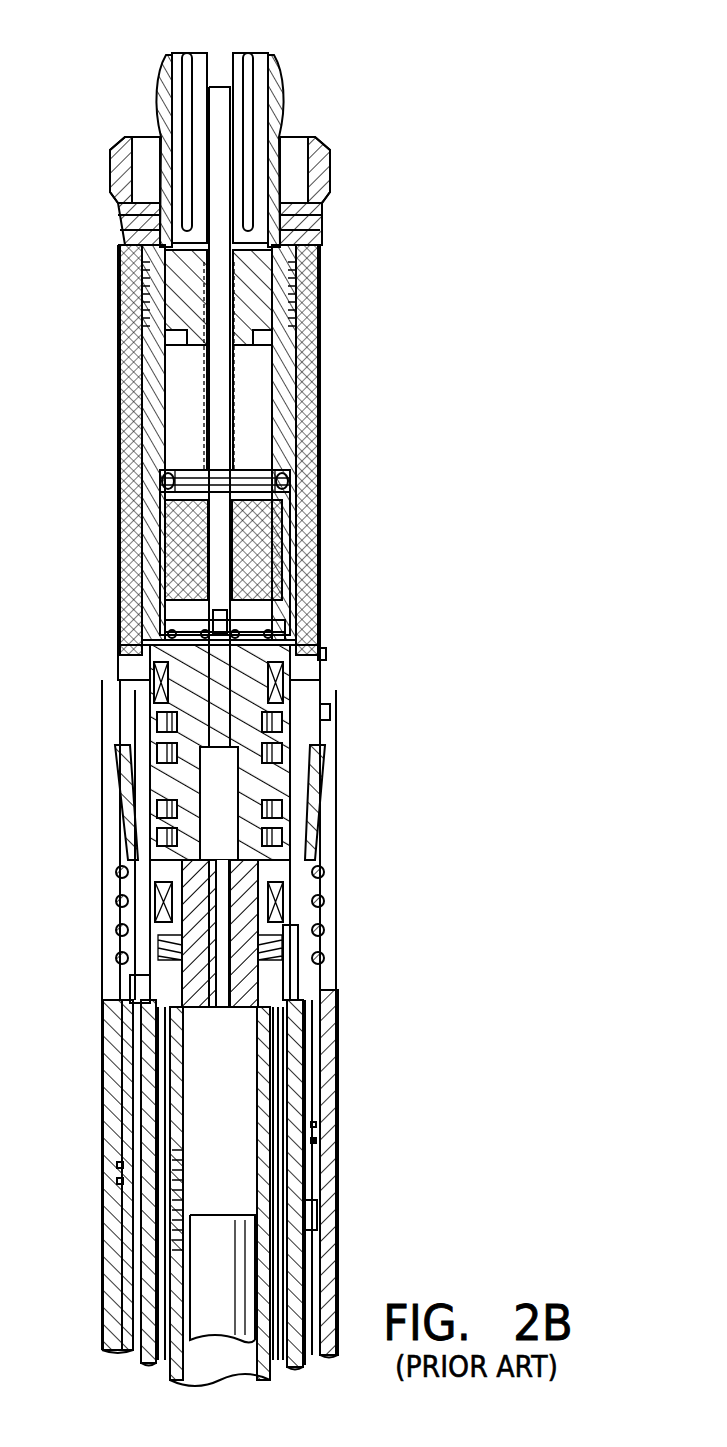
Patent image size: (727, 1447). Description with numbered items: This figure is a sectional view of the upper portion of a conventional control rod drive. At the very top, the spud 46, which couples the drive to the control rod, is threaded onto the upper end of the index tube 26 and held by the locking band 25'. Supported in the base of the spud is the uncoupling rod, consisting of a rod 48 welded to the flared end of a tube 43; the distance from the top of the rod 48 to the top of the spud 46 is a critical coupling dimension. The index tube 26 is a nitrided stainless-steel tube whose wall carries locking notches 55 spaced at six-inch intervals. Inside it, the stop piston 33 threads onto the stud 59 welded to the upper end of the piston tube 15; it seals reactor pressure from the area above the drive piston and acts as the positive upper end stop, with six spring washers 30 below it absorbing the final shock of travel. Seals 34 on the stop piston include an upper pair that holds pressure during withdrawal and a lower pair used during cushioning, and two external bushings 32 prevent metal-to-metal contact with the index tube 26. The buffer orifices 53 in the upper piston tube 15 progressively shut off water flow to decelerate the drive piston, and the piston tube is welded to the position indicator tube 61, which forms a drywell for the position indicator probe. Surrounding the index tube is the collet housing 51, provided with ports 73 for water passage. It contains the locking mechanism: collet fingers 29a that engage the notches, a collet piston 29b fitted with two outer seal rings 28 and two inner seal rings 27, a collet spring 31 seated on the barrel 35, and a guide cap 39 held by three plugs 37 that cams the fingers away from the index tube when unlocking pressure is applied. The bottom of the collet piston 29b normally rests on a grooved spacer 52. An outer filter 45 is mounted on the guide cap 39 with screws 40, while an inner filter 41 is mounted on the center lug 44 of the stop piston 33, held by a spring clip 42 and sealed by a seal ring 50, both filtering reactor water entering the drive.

The piston tube 15 is at (180, 1102).
The locking band 25' is at (254, 443).
The index tube 26 is at (290, 936).
The inner piston seal rings 27 is at (125, 1180).
The outer piston seal rings 28 is at (316, 1140).
The collet fingers 29a is at (132, 803).
The collet piston 29b is at (330, 1070).
The spring washers 30 is at (140, 985).
The collet spring 31 is at (116, 892).
The external bushings 32 is at (160, 668).
The stop piston 33 is at (285, 857).
The seals 34 is at (162, 752).
The barrel 35 is at (305, 800).
The plugs 37 is at (325, 712).
The guide cap 39 is at (300, 690).
The screws 40 is at (322, 652).
The inner filter 41 is at (290, 522).
The spring clip 42 is at (230, 623).
The tube 43 is at (200, 392).
The center lug 44 is at (275, 618).
The outer filter 45 is at (328, 137).
The spud 46 is at (170, 108).
The rod 48 is at (215, 100).
The seal ring 50 is at (305, 467).
The collet housing 51 is at (330, 1040).
The spacer 52 is at (318, 1212).
The buffer orifices 53 is at (186, 1190).
The locking notches 55 is at (300, 1167).
The stud 59 is at (192, 1007).
The position indicator tube 61 is at (203, 1296).
The ports 73 is at (328, 995).